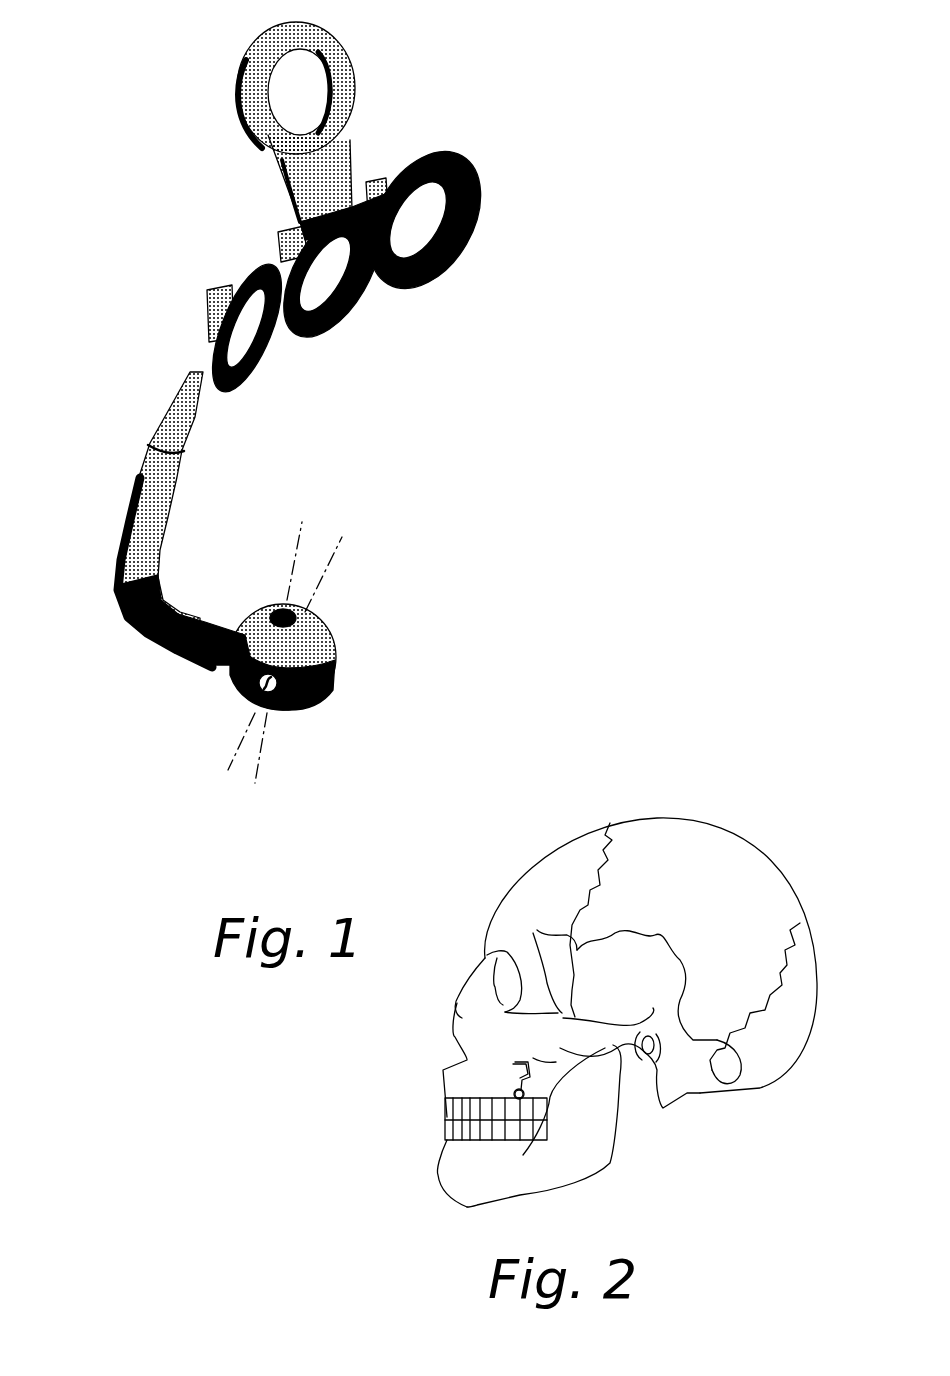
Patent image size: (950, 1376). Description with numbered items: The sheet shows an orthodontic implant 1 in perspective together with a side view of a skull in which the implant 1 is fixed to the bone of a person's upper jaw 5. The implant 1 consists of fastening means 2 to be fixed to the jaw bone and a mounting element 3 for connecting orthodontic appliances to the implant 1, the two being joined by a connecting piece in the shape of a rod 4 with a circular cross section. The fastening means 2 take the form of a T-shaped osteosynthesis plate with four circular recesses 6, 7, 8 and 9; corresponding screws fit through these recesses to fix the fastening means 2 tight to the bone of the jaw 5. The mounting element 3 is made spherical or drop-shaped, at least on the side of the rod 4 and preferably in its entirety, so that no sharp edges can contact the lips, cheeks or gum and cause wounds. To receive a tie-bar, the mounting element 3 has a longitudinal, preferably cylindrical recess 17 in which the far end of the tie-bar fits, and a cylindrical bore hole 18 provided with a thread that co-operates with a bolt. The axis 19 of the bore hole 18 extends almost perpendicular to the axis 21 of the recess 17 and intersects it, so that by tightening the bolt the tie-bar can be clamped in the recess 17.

In FIG. 1, the implant 1 is at (387, 427).
In FIG. 2, the implant 1 is at (512, 1078).
In FIG. 1, the fastening means 2 is at (318, 180).
In FIG. 2, the fastening means 2 is at (513, 1067).
In FIG. 1, the mounting element 3 is at (318, 655).
In FIG. 2, the mounting element 3 is at (518, 1100).
In FIG. 1, the rod 4 is at (148, 495).
In FIG. 2, the upper jaw 5 is at (533, 1063).
In FIG. 1, the circular recess 6 is at (242, 333).
In FIG. 1, the circular recess 7 is at (322, 280).
In FIG. 1, the circular recess 8 is at (422, 218).
In FIG. 1, the circular recess 9 is at (307, 87).
In FIG. 1, the recess 17 is at (242, 702).
In FIG. 1, the bore hole 18 is at (278, 610).
In FIG. 1, the axis of the bore hole 19 is at (260, 755).
In FIG. 1, the axis of the recess 21 is at (332, 563).